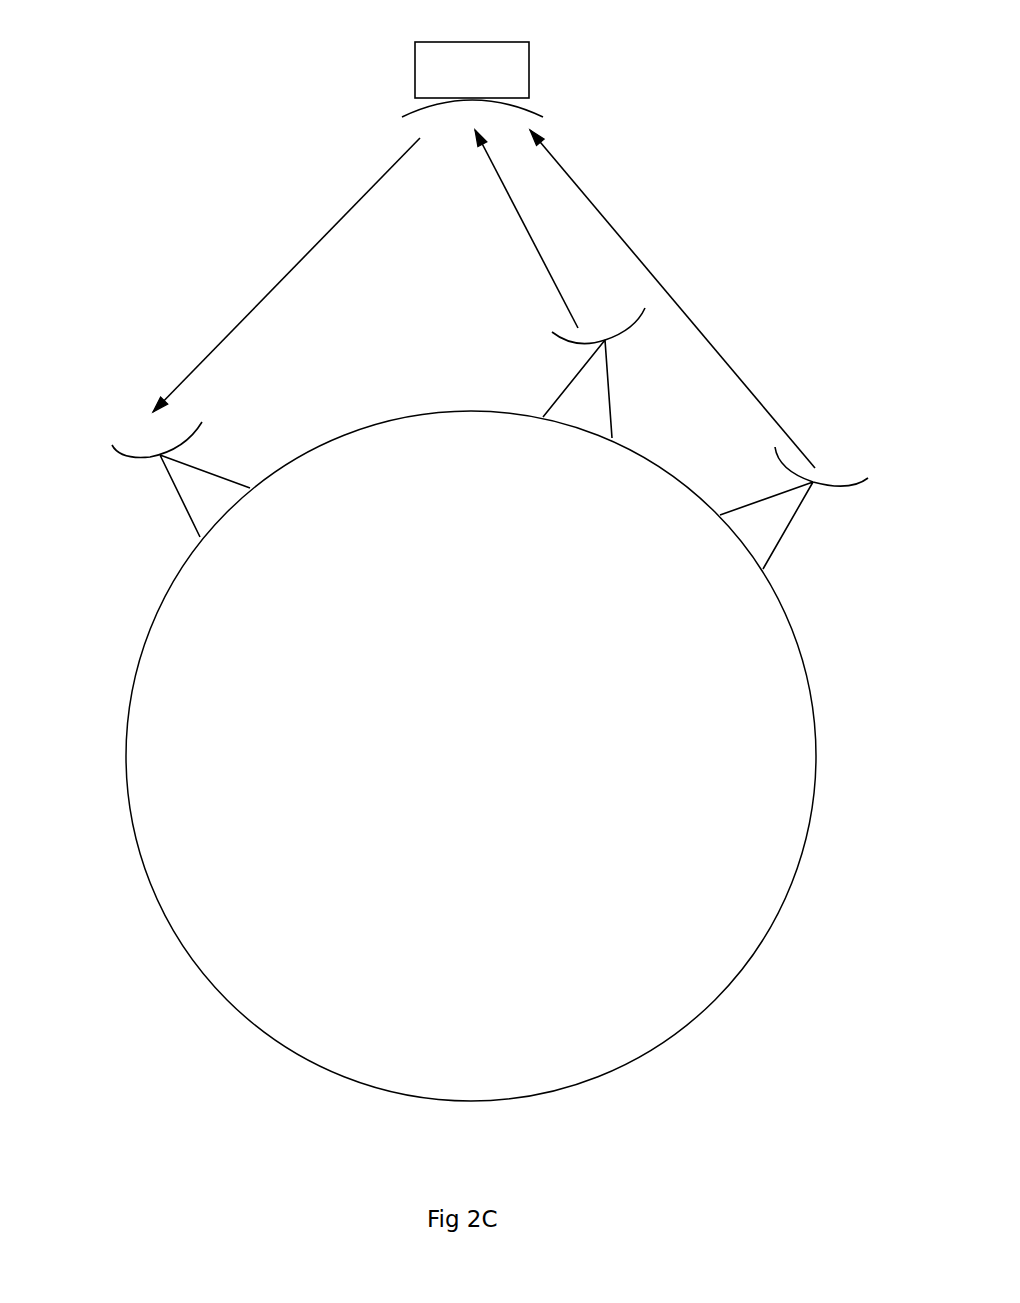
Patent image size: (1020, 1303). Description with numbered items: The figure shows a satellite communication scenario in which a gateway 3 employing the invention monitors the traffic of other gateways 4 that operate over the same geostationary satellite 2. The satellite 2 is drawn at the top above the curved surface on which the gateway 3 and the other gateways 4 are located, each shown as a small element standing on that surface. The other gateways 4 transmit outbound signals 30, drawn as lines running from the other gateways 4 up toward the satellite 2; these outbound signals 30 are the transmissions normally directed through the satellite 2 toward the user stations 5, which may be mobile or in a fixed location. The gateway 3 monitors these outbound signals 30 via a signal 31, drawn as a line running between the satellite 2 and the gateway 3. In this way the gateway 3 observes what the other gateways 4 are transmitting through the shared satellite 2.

The geostationary satellite 2 is at (417, 85).
The gateway 3 is at (122, 460).
The other gateways 4 is at (560, 345).
The user stations 5 is at (233, 380).
The outbound signals 30 is at (535, 240).
The signal 31 is at (245, 308).